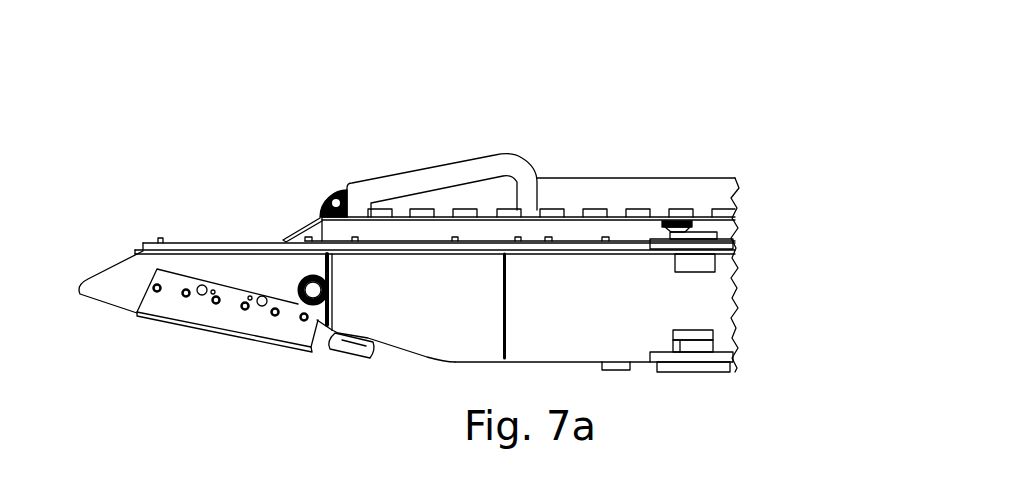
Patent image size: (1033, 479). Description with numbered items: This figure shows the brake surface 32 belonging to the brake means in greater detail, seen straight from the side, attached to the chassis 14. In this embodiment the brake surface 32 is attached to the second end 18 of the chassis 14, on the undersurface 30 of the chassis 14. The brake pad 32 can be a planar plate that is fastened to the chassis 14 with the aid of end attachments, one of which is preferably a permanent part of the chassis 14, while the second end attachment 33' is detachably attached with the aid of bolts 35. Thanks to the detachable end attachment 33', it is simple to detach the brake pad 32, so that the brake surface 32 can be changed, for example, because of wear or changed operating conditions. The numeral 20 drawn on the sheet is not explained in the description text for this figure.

The chassis 14 is at (551, 327).
The second end 18 is at (72, 232).
The top rail / track 20 is at (590, 175).
The undersurface 30 is at (427, 360).
The brake surface 32 is at (227, 334).
The second end attachment 33' is at (224, 355).
The bolts 35 is at (200, 283).